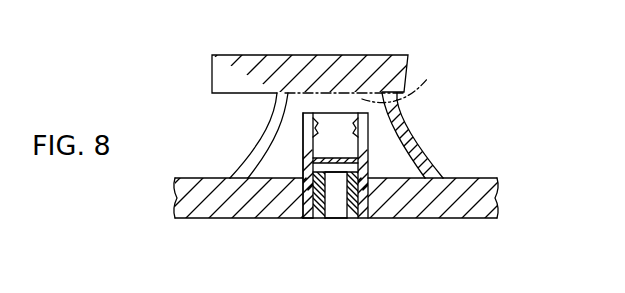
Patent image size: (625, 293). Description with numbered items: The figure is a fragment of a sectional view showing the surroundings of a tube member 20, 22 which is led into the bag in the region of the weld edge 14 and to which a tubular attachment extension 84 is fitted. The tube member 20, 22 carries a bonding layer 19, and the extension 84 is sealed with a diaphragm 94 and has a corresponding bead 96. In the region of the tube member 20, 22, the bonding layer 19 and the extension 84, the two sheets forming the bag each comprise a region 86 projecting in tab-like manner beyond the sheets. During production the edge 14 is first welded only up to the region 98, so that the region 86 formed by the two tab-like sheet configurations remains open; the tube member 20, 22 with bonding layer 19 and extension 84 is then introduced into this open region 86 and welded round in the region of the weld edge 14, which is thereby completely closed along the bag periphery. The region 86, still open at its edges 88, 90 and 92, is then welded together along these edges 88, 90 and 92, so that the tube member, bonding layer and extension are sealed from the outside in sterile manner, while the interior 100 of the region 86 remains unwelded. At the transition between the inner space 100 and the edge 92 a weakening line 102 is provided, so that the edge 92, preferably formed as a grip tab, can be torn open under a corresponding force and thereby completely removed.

The edge 14 is at (492, 207).
The bonding layer 19 is at (306, 219).
The tube member 20 is at (357, 220).
The tube member 22 is at (347, 219).
The tubular attachment extension 84 is at (362, 164).
The region 86 is at (428, 113).
The edge 88 is at (262, 148).
The edge 90 is at (370, 162).
The edge 92 is at (347, 55).
The diaphragm 94 is at (336, 159).
The bead 96 is at (318, 122).
The region 98 is at (234, 180).
The interior 100 is at (292, 128).
The weakening line 102 is at (428, 78).